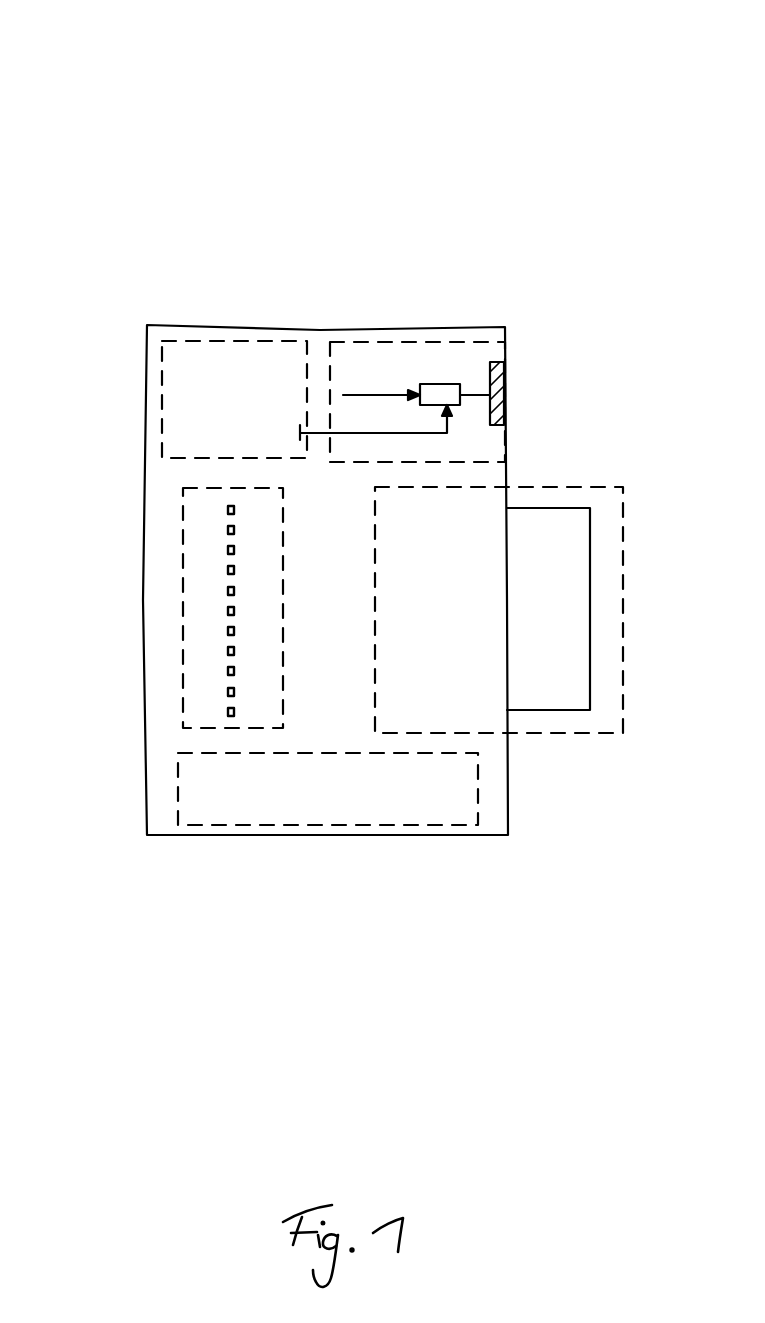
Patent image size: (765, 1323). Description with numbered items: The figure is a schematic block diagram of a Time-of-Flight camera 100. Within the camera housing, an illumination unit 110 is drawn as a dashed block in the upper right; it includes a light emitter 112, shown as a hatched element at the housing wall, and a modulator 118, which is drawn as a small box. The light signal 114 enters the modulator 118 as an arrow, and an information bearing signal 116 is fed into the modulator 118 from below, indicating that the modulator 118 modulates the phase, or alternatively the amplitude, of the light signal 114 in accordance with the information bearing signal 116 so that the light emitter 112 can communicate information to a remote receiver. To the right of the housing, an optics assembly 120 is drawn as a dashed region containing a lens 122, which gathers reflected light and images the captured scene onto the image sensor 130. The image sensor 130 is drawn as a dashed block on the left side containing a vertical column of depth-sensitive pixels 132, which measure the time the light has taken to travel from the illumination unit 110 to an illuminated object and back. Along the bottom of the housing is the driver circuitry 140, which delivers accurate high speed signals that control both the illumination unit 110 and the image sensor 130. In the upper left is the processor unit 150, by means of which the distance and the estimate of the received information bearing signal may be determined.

The Time-of-Flight camera 100 is at (563, 75).
The illumination unit 110 is at (463, 342).
The light emitter 112 is at (500, 370).
The light signal 114 is at (363, 395).
The information bearing signal 116 is at (313, 433).
The modulator 118 is at (437, 384).
The optics assembly 120 is at (550, 482).
The lens 122 is at (558, 602).
The image sensor 130 is at (181, 630).
The depth-sensitive pixels 132 is at (228, 540).
The driver circuitry 140 is at (358, 808).
The processor unit 150 is at (252, 417).